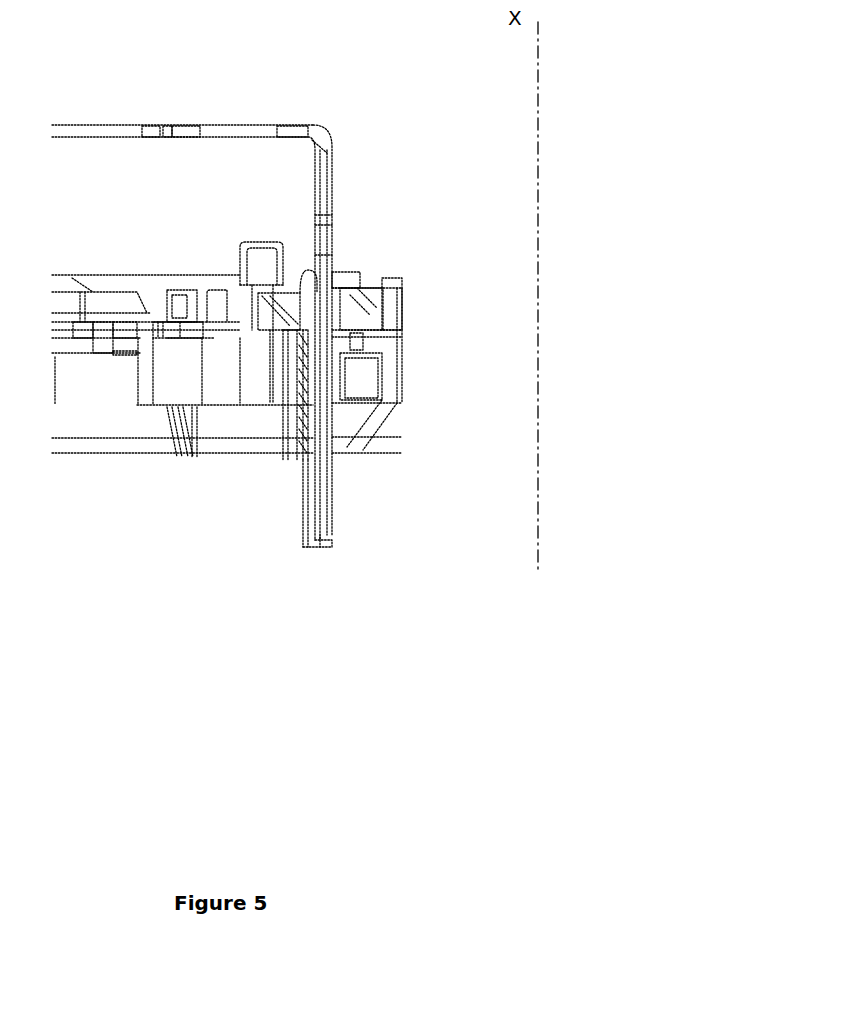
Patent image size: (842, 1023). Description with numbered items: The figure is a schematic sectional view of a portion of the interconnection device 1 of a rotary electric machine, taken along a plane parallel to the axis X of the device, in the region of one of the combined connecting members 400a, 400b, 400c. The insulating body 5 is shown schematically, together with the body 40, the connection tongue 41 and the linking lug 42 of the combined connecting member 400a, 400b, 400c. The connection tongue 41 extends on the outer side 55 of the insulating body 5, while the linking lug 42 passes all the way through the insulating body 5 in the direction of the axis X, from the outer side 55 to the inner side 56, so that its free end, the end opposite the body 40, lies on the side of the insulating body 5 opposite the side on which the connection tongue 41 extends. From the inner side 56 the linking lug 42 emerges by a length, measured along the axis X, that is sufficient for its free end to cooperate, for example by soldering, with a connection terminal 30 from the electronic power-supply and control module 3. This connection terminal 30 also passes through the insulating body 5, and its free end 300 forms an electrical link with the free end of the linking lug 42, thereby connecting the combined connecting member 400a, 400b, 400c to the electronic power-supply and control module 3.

The interconnection device 1 is at (350, 255).
The electronic power-supply and control module 3 is at (160, 116).
The insulating body 5 is at (131, 414).
The connection terminal 30 is at (327, 473).
The body 40 is at (270, 322).
The connection tongue 41 is at (232, 305).
The linking lug 42 is at (313, 483).
The outer side 55 is at (88, 236).
The inner side 56 is at (241, 483).
The free end 300 is at (328, 547).
The combined connecting member 400a is at (263, 333).
The combined connecting member 400b is at (154, 486).
The combined connecting member 400c is at (156, 498).